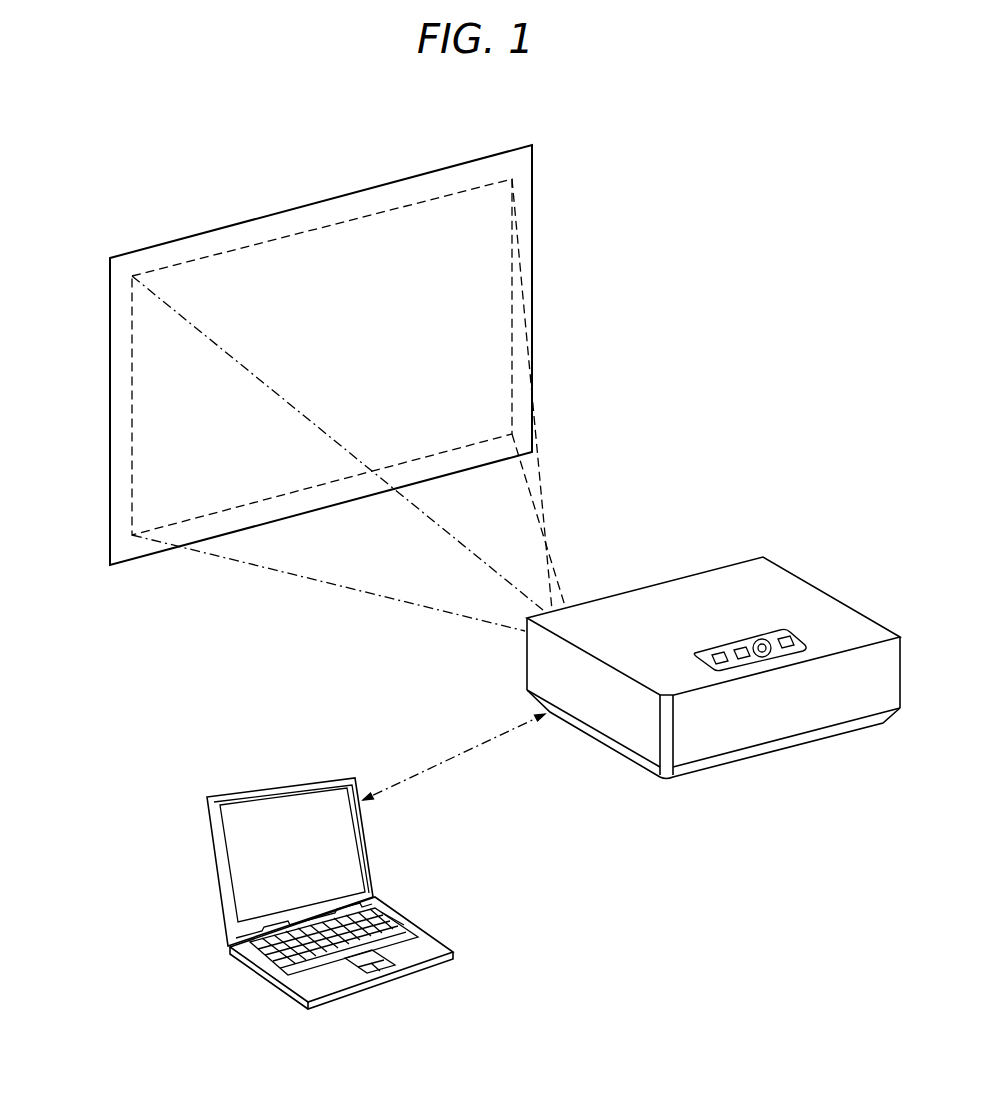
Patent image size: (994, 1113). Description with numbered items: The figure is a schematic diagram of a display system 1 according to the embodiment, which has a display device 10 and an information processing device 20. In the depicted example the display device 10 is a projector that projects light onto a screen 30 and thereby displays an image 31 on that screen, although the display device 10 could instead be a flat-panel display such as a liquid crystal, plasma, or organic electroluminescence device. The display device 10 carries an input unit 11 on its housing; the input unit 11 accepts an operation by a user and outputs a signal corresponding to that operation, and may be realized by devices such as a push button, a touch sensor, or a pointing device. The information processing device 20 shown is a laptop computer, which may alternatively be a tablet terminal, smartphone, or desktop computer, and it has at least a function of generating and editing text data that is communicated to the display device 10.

The display system 1 is at (803, 428).
The display device 10 is at (797, 590).
The input unit 11 is at (790, 630).
The information processing device 20 is at (380, 983).
The screen 30 is at (120, 349).
The image 31 is at (382, 210).